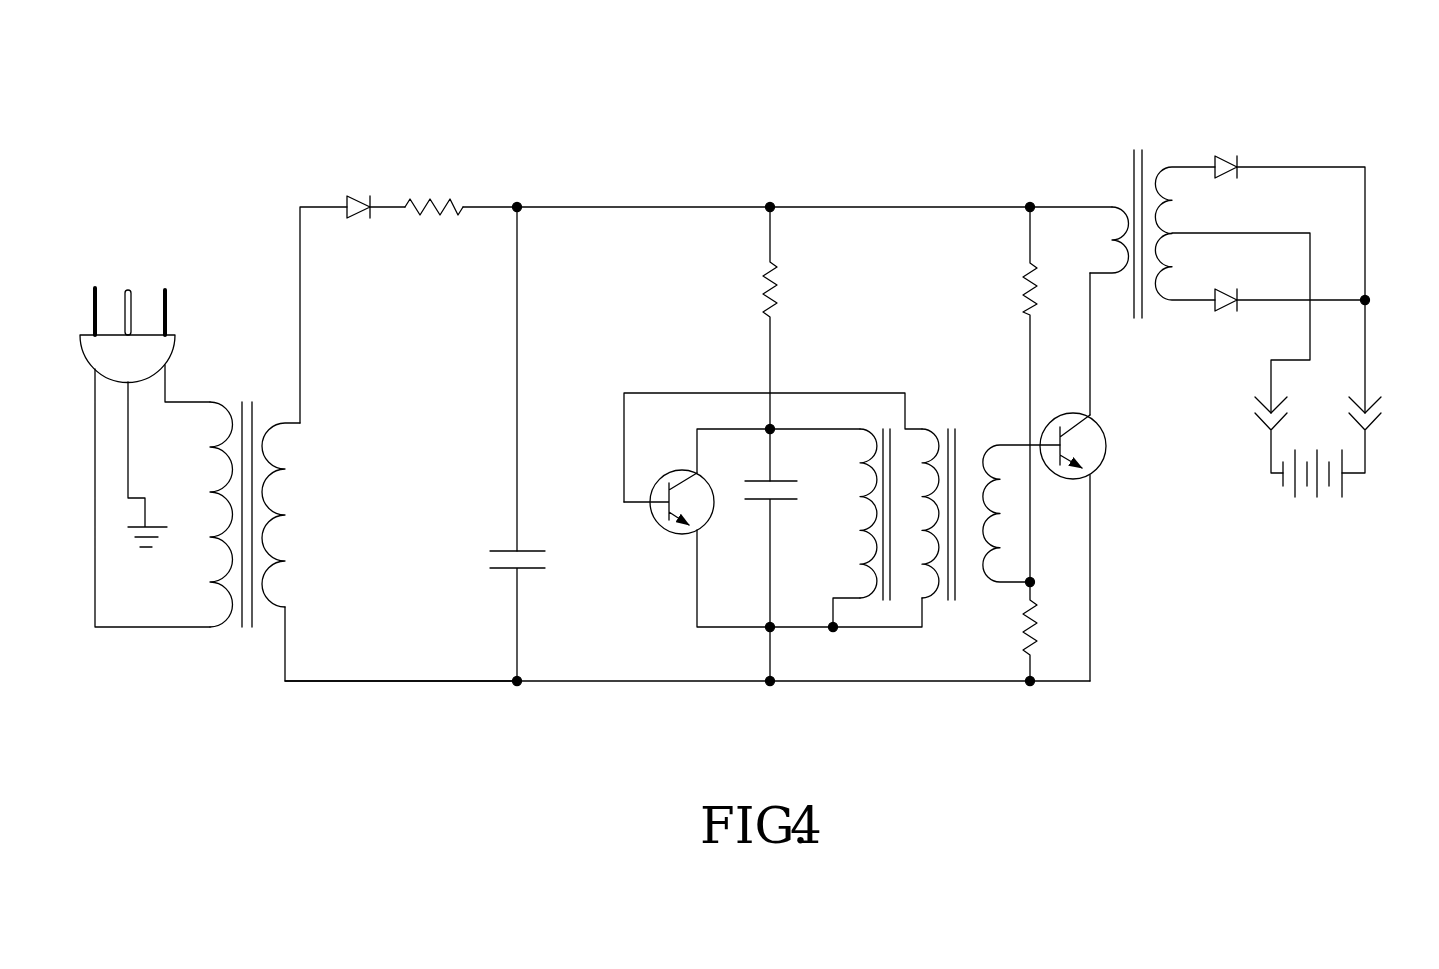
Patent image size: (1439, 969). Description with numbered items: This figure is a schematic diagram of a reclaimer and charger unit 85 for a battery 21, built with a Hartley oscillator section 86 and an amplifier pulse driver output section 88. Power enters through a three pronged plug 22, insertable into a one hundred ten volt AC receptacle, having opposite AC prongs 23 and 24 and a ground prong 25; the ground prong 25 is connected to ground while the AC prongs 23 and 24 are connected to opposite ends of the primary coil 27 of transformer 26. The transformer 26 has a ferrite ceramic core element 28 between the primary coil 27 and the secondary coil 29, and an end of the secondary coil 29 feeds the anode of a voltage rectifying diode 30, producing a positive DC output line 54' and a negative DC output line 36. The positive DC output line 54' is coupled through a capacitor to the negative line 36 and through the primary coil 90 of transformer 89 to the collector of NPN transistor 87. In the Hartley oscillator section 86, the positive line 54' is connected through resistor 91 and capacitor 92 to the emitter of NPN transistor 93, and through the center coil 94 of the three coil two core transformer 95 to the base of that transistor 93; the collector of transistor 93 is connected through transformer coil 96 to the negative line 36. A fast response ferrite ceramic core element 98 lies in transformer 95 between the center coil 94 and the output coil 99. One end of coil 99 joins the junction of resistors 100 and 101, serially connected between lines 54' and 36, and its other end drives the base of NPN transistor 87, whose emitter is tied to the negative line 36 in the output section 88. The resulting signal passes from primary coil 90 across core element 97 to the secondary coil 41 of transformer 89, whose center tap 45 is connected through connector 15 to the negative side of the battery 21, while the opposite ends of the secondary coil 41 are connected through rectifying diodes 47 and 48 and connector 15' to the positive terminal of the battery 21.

The connector 15 is at (1258, 460).
The connector 15' is at (1384, 460).
The battery 21 is at (1297, 490).
The three pronged plug 22 is at (163, 353).
The AC prong 23 is at (95, 288).
The AC prong 24 is at (165, 297).
The ground prong 25 is at (130, 290).
The transformer 26 is at (249, 532).
The primary coil 27 is at (210, 540).
The ferrite ceramic core element 28 is at (250, 402).
The secondary coil 29 is at (313, 515).
The voltage rectifying diode 30 is at (352, 197).
The negative DC output line 36 is at (343, 683).
The secondary coil 41 is at (1172, 167).
The center tap 45 is at (1180, 233).
The rectifying diode 47 is at (1218, 160).
The rectifying diode 48 is at (1222, 305).
The positive DC output line 54' is at (542, 350).
The reclaimer and charger unit 85 is at (658, 190).
The Hartley oscillator section 86 is at (898, 522).
The NPN transistor 87 is at (1108, 450).
The amplifier pulse driver output section 88 is at (1057, 497).
The transformer 89 is at (1179, 245).
The primary coil 90 is at (1112, 241).
The resistor 91 is at (765, 285).
The capacitor 92 is at (758, 500).
The NPN transistor 93 is at (672, 533).
The center coil 94 is at (937, 600).
The three coil two core transformer 95 is at (940, 398).
The transformer coil 96 is at (858, 505).
The core element 97 is at (1132, 158).
The fast response ferrite ceramic core element 98 is at (955, 600).
The output coil 99 is at (1003, 445).
The resistor 100 is at (1027, 285).
The resistor 101 is at (1038, 615).